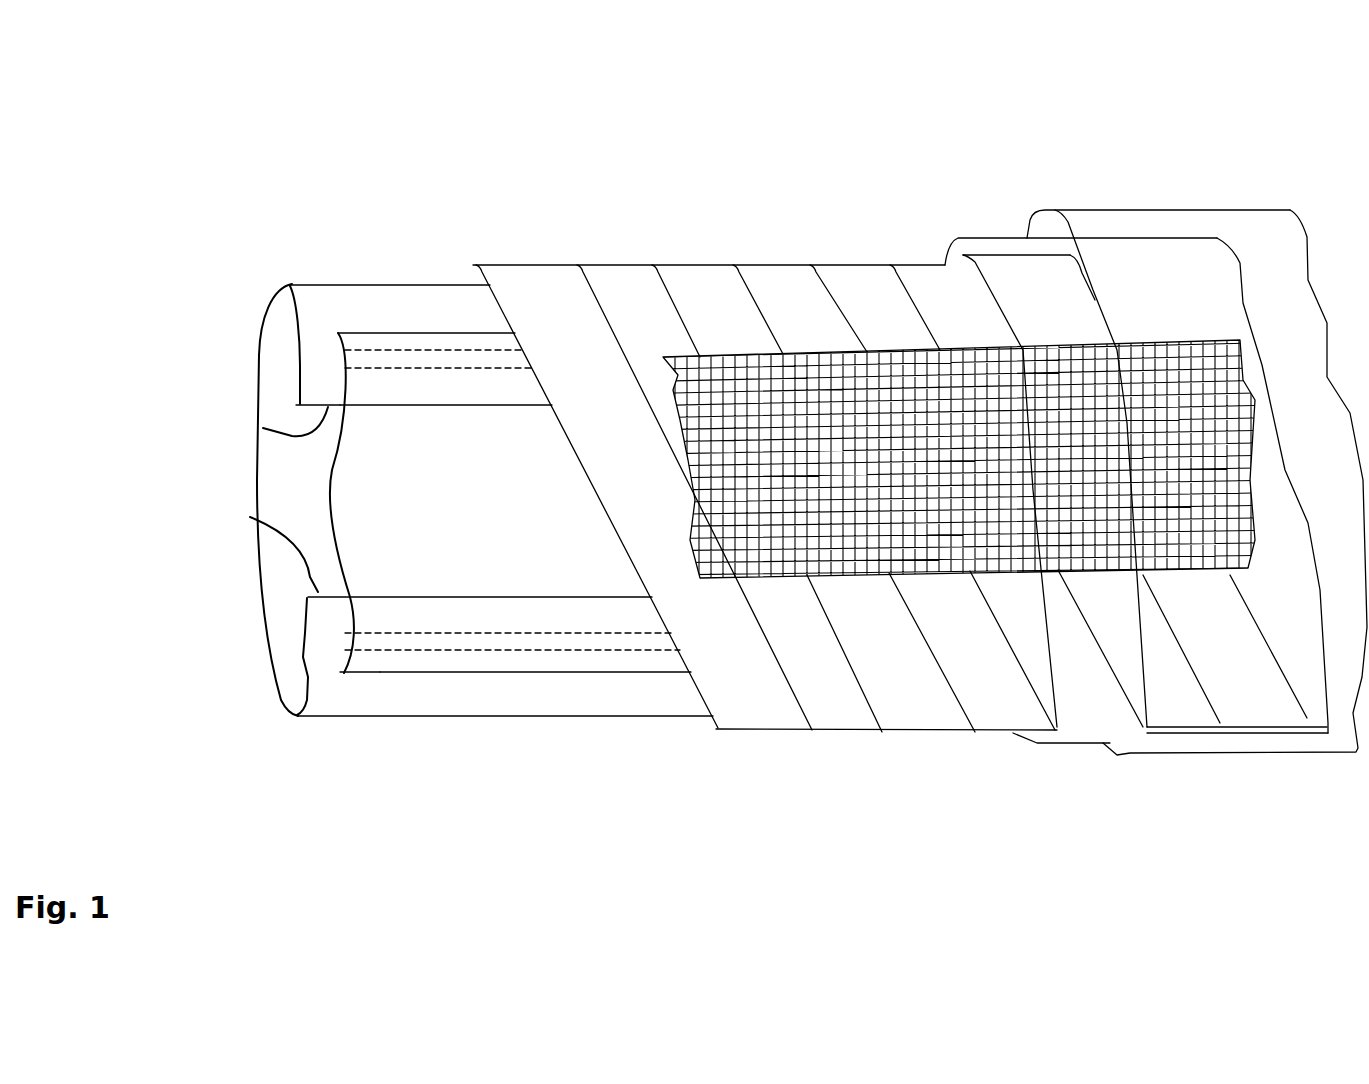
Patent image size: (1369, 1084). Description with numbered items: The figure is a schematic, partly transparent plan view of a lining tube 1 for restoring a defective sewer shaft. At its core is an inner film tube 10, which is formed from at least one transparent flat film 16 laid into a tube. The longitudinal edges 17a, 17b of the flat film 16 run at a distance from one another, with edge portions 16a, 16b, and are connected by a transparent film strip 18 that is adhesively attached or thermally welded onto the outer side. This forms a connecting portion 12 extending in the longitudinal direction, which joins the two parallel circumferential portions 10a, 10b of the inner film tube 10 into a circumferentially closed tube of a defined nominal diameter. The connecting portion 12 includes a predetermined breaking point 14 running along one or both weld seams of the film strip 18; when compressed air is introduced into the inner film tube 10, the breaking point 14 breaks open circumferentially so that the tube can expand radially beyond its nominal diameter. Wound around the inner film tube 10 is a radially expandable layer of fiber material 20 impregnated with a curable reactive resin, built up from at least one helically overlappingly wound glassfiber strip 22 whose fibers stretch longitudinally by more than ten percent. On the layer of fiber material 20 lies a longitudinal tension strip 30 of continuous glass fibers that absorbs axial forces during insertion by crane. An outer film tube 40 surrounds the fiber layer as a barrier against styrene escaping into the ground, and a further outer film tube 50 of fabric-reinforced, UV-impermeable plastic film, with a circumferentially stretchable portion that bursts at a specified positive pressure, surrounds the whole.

The lining tube 1 is at (214, 202).
The inner film tube 10 is at (372, 278).
The first circumferential portion of the inner film tube 10a is at (340, 390).
The second circumferential portion of the inner film tube 10b is at (323, 620).
The connecting portion 12 is at (424, 358).
The predetermined breaking point 14 is at (402, 352).
The flat film formed into a tube 16 is at (283, 480).
The edge portion 16a is at (313, 331).
The edge portion 16b is at (332, 609).
The longitudinal edge 17a is at (337, 388).
The longitudinal edge 17b is at (297, 523).
The welded-on film strip 18 is at (440, 500).
The layer of fiber material 20 is at (803, 259).
The fiber strip 22 is at (703, 302).
The longitudinal tension strip 30 is at (862, 445).
The outer film tube 40 is at (1113, 278).
The further outer film tube of reinforced tension-resistant material 50 is at (1263, 252).